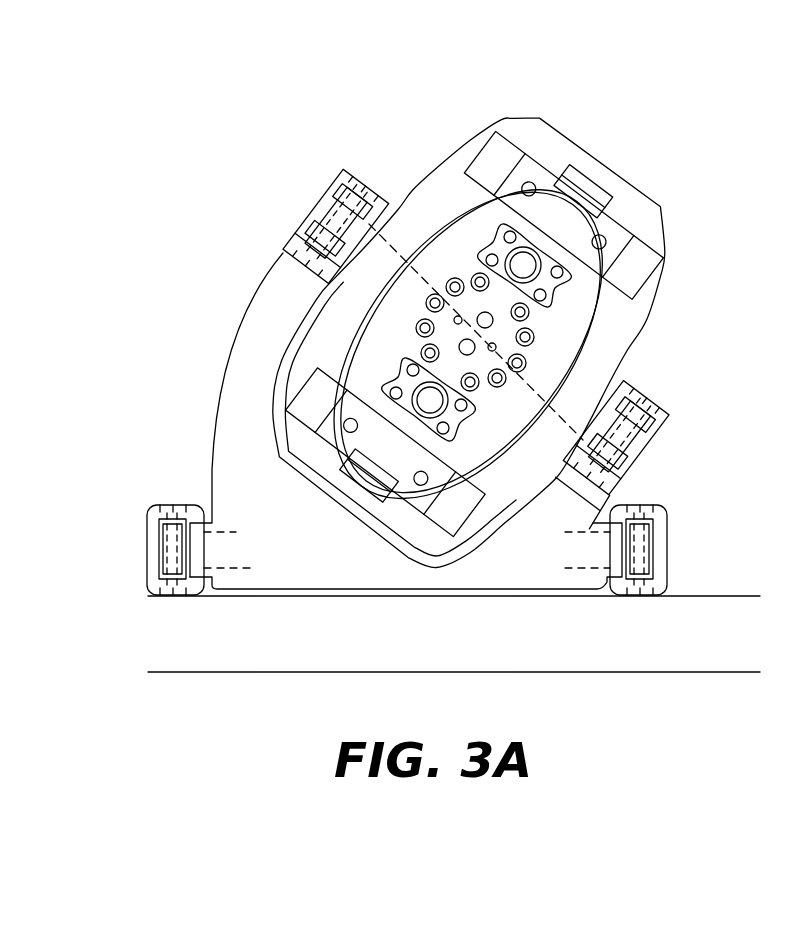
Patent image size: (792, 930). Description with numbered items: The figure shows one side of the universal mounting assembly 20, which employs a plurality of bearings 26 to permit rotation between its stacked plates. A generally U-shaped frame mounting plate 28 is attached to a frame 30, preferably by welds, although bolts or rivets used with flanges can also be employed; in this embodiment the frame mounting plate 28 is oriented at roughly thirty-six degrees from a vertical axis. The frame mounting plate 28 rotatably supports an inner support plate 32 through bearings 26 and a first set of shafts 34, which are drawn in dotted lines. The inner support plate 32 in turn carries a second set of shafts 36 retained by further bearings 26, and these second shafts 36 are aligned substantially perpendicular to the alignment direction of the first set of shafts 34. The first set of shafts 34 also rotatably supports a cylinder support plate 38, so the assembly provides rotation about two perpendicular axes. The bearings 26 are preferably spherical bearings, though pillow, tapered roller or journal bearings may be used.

The optical coupling assembly 20 is at (651, 140).
The bearings 26 is at (562, 178).
The frame mounting plate 28 is at (238, 388).
The frame 30 is at (622, 647).
The inner support plate 32 is at (631, 345).
The first set of shafts 34 is at (372, 232).
The second set of shafts 36 is at (602, 210).
The cylinder support plate 38 is at (572, 318).